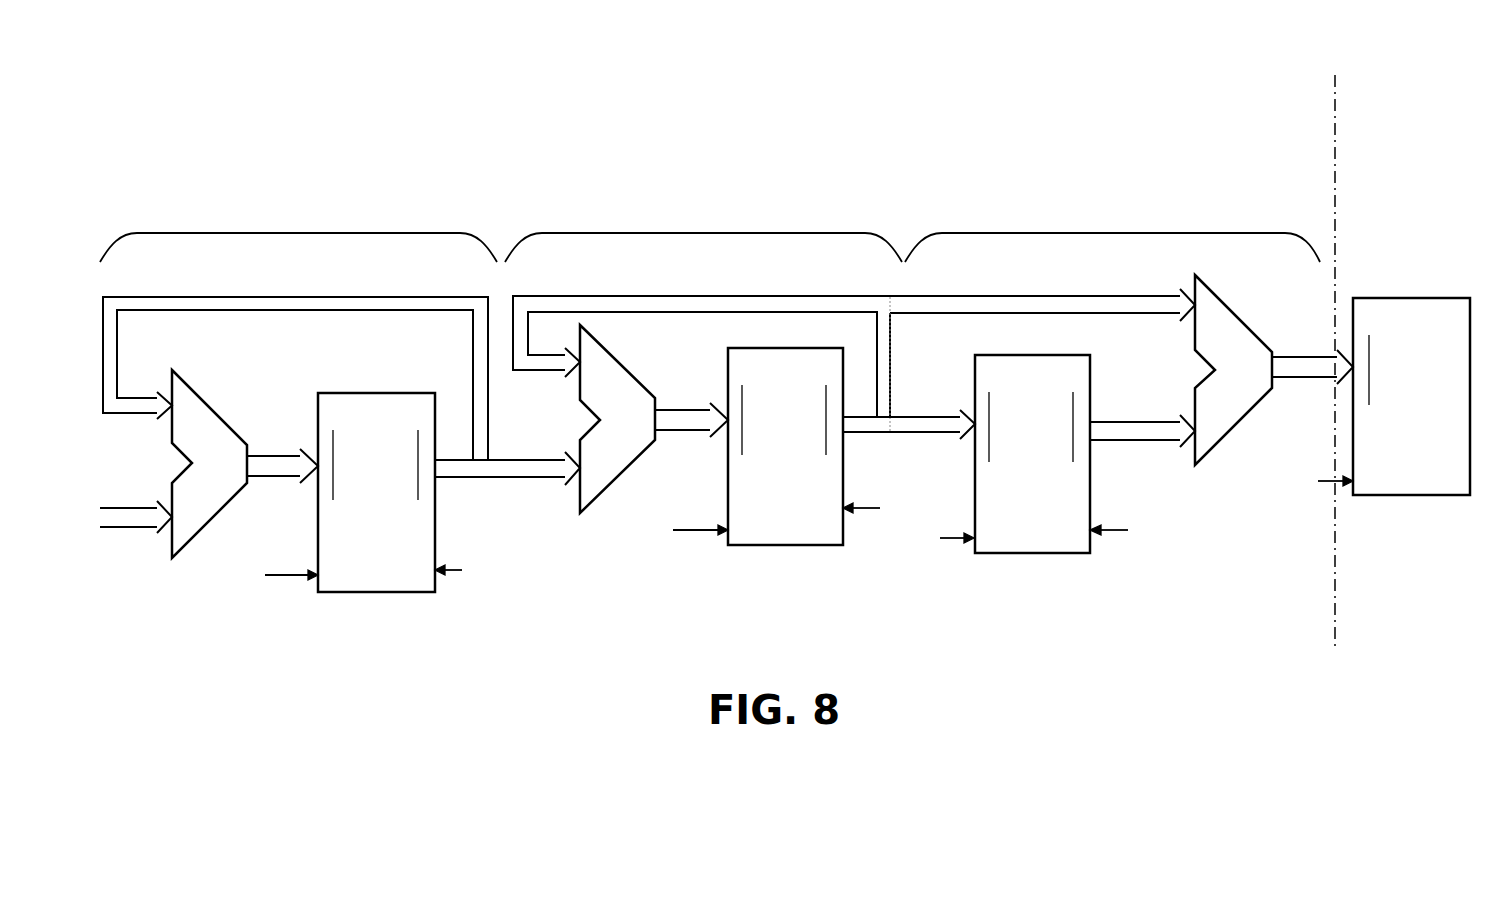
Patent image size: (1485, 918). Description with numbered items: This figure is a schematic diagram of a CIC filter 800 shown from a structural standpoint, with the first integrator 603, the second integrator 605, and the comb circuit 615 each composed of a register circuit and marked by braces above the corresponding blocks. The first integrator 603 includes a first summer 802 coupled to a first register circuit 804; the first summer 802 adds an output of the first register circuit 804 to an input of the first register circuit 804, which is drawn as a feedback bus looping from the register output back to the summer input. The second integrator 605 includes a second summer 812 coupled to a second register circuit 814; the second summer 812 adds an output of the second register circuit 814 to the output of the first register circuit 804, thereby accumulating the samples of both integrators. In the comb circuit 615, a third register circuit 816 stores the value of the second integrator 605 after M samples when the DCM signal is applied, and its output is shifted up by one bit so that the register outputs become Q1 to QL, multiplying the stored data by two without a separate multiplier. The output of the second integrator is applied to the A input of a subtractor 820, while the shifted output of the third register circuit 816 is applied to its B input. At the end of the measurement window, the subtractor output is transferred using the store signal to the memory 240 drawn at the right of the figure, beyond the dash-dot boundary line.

The CIC filter 800 is at (723, 105).
The first integrator 603 is at (300, 233).
The second integrator 605 is at (703, 233).
The comb circuit 615 is at (1127, 233).
The first summer 802 is at (172, 558).
The first register circuit 804 is at (380, 592).
The second summer 812 is at (580, 513).
The second register circuit 814 is at (787, 545).
The third register circuit 816 is at (1028, 553).
The subtractor 820 is at (1233, 432).
The memory 240 is at (1440, 378).